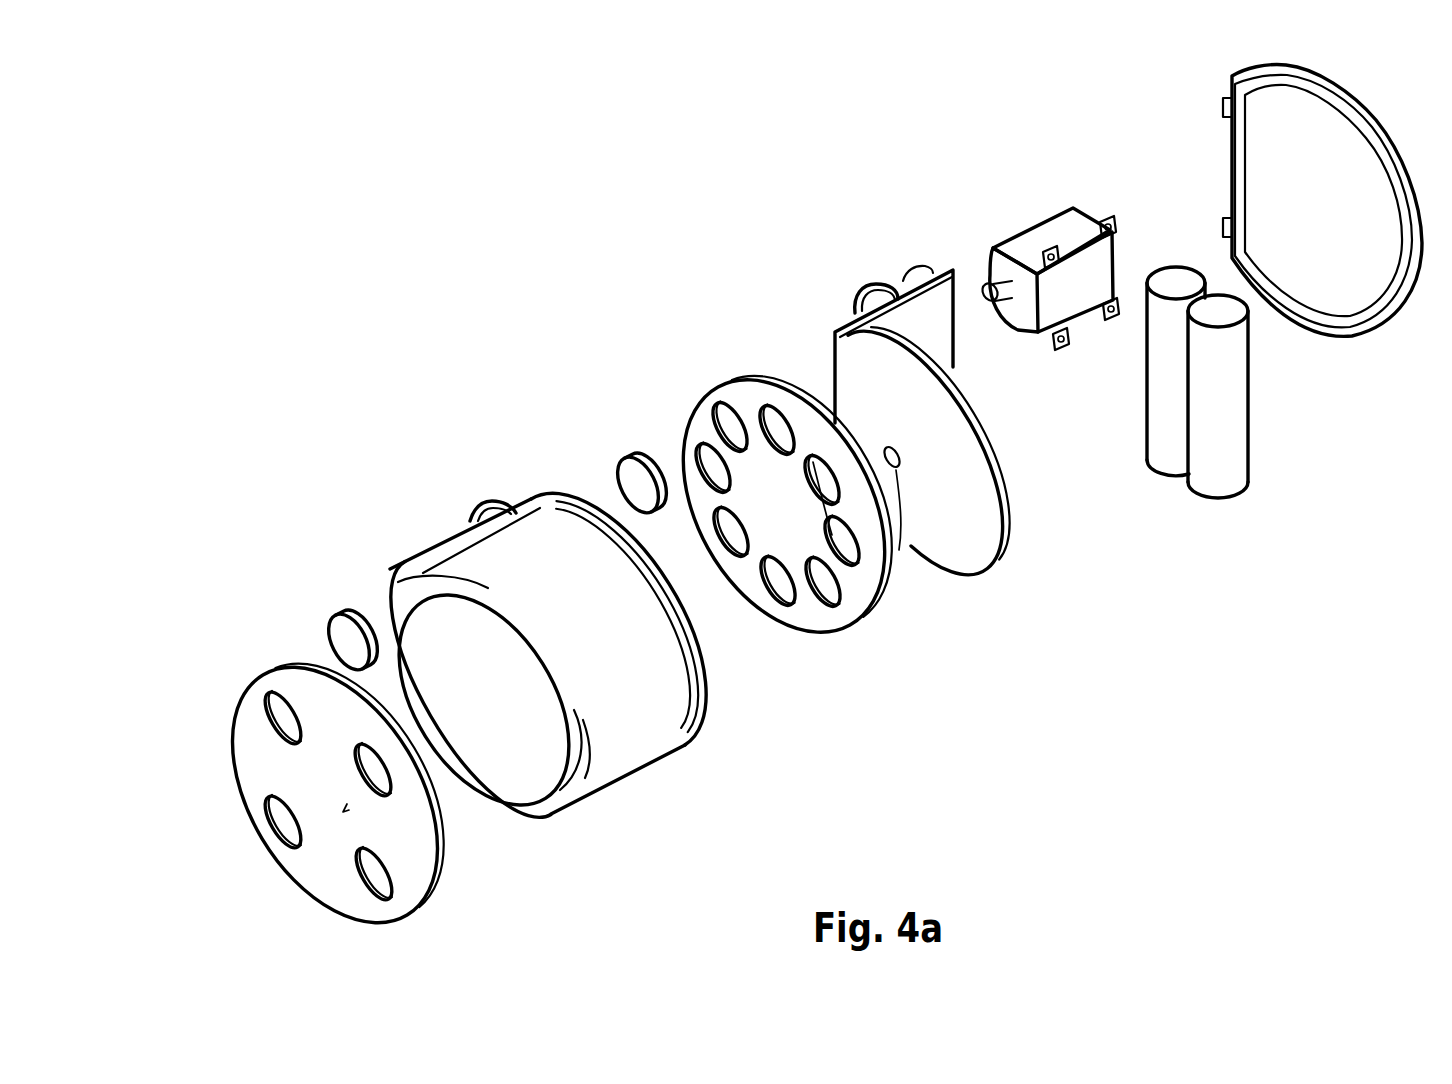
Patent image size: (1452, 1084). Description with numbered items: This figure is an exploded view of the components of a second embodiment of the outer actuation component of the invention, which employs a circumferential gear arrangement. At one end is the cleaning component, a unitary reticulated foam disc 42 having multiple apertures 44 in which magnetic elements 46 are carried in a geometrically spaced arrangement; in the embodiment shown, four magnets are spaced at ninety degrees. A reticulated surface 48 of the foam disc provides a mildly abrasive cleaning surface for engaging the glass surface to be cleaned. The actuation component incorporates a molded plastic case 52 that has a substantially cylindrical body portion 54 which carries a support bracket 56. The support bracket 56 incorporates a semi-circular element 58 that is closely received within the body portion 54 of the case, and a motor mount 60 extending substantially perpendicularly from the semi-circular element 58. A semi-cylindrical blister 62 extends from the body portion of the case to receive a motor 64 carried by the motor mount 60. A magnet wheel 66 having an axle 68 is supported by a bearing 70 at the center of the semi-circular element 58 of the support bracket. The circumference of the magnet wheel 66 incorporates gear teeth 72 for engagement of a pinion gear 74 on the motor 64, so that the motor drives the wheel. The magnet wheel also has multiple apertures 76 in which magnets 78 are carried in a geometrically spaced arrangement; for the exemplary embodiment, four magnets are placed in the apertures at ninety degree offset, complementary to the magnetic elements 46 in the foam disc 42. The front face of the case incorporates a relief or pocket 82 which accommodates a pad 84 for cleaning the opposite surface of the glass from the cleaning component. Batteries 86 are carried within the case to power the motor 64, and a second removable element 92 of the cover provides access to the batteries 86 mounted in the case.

The reticulated foam disc 42 is at (337, 764).
The apertures 44 is at (285, 718).
The magnetic elements 46 is at (347, 609).
The reticulated surface 48 is at (343, 812).
The molded plastic case 52 is at (540, 484).
The cylindrical body portion 54 is at (587, 493).
The support bracket 56 is at (954, 405).
The semi-circular element 58 is at (1002, 472).
The motor mount 60 is at (940, 320).
The semi-cylindrical blister 62 is at (551, 648).
The motor 64 is at (1048, 276).
The magnet wheel 66 is at (801, 491).
The axle 68 is at (874, 597).
The bearing 70 is at (917, 570).
The gear teeth 72 is at (800, 630).
The pinion gear 74 is at (1007, 317).
The apertures 76 is at (782, 427).
The magnets 78 is at (637, 457).
The relief or pocket 82 is at (567, 787).
The pad 84 is at (490, 745).
The batteries 86 is at (1251, 404).
The second removable element 92 is at (1335, 333).